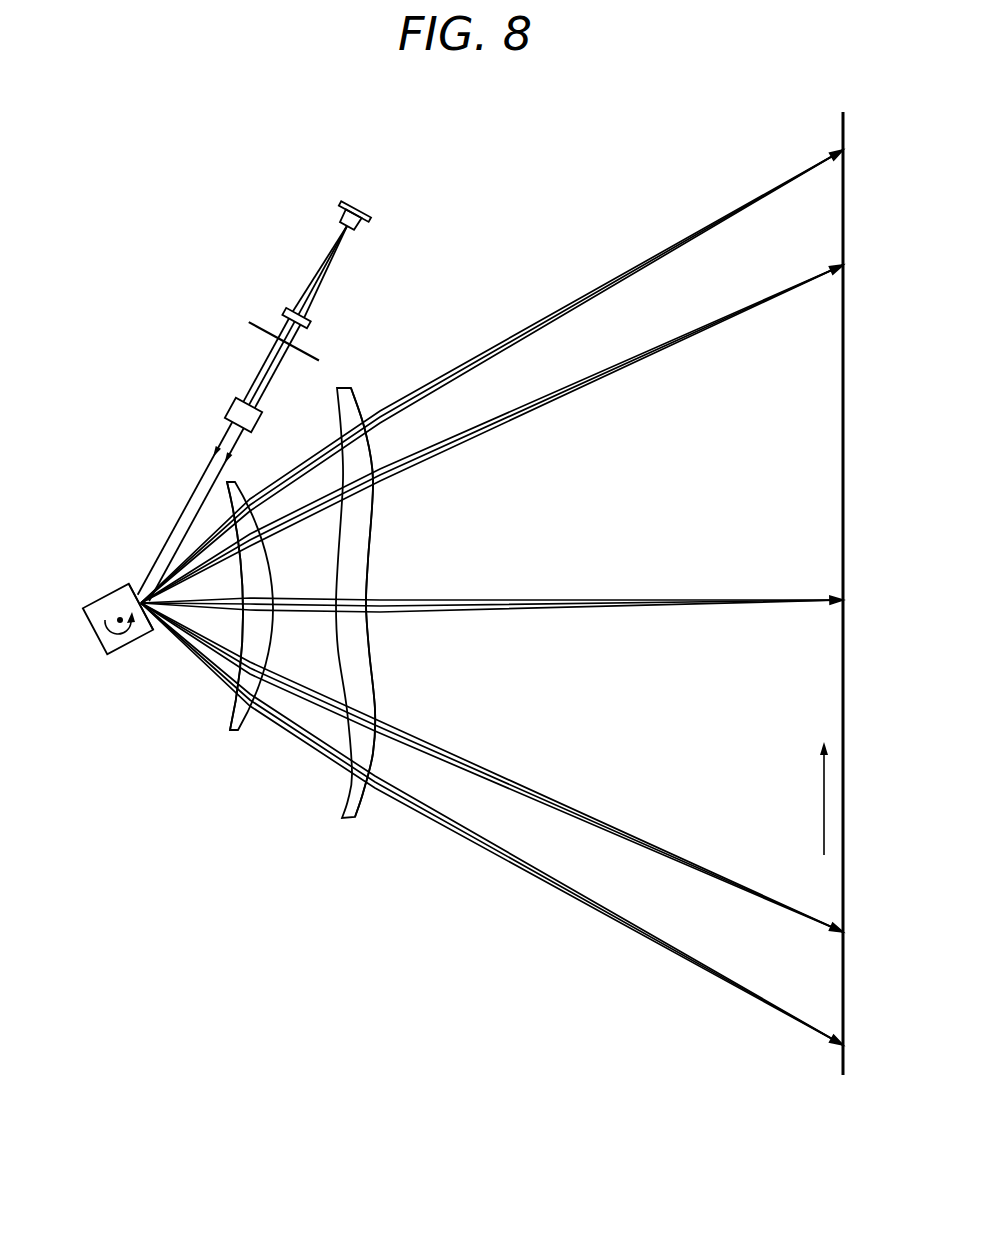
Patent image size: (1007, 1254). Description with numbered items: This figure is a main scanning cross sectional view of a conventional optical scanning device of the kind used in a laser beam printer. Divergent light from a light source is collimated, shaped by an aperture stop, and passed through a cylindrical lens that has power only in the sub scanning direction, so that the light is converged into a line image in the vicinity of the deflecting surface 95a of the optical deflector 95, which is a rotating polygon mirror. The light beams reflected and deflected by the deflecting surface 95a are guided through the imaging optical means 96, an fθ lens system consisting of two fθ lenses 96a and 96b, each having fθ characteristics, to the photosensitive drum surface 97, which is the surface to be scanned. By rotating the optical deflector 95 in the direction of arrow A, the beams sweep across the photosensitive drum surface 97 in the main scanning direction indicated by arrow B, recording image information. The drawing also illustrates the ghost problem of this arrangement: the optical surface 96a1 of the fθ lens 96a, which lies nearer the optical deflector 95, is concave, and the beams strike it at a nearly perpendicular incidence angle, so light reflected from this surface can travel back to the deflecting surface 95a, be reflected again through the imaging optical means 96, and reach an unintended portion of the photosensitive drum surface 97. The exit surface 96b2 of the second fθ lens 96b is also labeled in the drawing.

The optical deflector 95 is at (96, 650).
The deflecting surface 95a is at (149, 642).
The imaging optical means 96 is at (293, 635).
The fθ lens 96a is at (202, 649).
The optical surface 96a1 is at (229, 648).
The fθ lens 96b is at (358, 635).
The exit surface of second scanning lens 96b2 is at (374, 765).
The photosensitive drum surface 97 is at (846, 876).
The arrow A is at (92, 634).
The arrow B is at (822, 812).